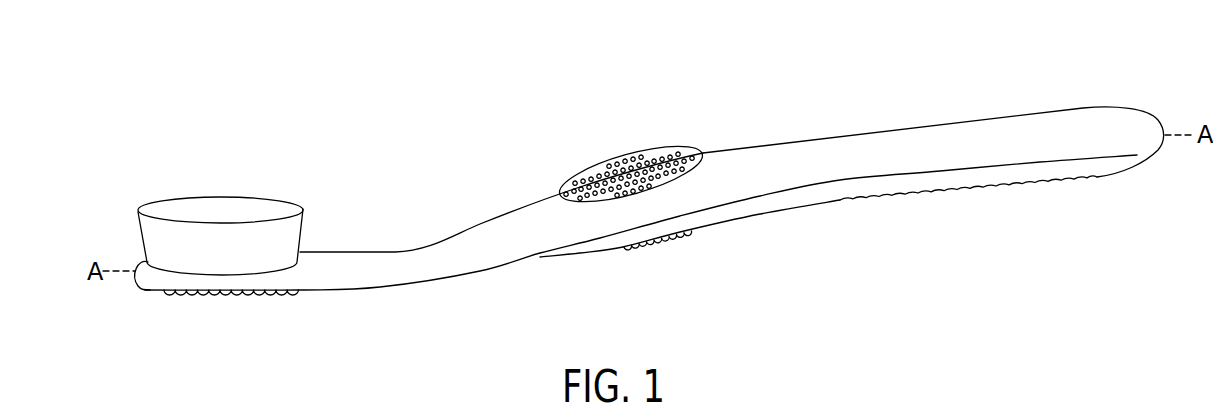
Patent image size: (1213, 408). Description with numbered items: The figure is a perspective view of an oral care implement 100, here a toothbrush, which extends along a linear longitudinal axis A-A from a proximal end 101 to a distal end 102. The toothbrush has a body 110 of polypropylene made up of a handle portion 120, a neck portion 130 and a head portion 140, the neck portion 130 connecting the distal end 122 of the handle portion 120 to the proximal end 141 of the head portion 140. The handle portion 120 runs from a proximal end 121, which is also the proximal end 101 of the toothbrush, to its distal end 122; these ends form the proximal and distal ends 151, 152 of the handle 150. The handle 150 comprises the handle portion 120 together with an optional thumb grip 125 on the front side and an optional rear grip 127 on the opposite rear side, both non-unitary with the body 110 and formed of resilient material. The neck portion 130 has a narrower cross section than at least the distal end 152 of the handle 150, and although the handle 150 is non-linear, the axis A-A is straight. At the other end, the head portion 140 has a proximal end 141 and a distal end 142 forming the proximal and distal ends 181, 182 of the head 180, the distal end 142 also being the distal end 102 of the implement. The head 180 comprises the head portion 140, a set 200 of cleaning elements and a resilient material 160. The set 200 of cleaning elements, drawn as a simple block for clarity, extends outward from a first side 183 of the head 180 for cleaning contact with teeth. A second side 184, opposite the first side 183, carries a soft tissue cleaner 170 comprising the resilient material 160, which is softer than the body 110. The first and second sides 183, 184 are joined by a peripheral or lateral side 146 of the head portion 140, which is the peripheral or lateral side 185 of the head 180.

The oral care implement 100 is at (663, 102).
The proximal end 101 is at (1158, 152).
The distal end 102 is at (123, 255).
The body 110 is at (848, 150).
The handle portion 120 is at (933, 124).
The proximal end of the handle portion 121 is at (1119, 82).
The proximal end of the handle 151 is at (1158, 122).
The distal end of the handle portion 122 is at (495, 183).
The distal end of the handle 152 is at (513, 228).
The thumb grip 125 is at (615, 167).
The rear grip 127 is at (688, 228).
The neck portion 130 is at (403, 260).
The head portion 140 is at (306, 262).
The proximal end of the head portion 141 is at (382, 201).
The proximal end of the head 181 is at (337, 267).
The distal end of the head portion 142 is at (122, 197).
The distal end of the head 182 is at (137, 262).
The peripheral side of the head portion 146 is at (210, 290).
The handle 150 is at (753, 119).
The resilient material 160 is at (159, 310).
The soft tissue cleaner 170 is at (258, 312).
The head 180 is at (191, 162).
The first side of the head 183 is at (280, 278).
The second side of the head 184 is at (188, 301).
The peripheral side of the head 185 is at (178, 288).
The set of cleaning elements 200 is at (263, 207).